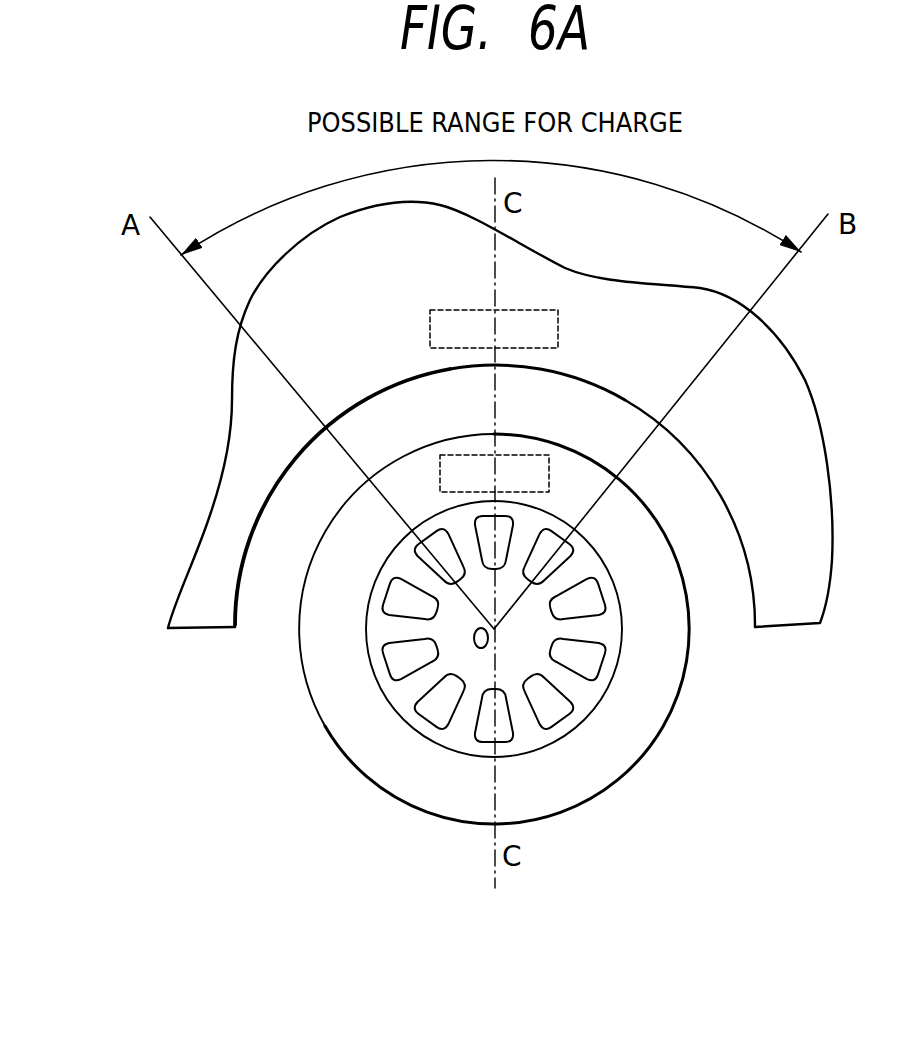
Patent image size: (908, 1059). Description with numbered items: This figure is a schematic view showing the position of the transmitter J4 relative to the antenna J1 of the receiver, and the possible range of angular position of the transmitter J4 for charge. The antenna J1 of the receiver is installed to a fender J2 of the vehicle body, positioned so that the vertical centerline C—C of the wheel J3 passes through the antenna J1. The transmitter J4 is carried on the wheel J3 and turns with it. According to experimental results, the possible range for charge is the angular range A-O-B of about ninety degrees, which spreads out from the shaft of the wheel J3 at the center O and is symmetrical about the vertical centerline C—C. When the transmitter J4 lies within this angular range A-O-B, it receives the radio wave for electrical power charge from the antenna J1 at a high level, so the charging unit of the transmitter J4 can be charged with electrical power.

The antenna J1 is at (558, 327).
The fender J2 is at (752, 600).
The wheel J3 is at (582, 720).
The transmitter J4 is at (508, 453).